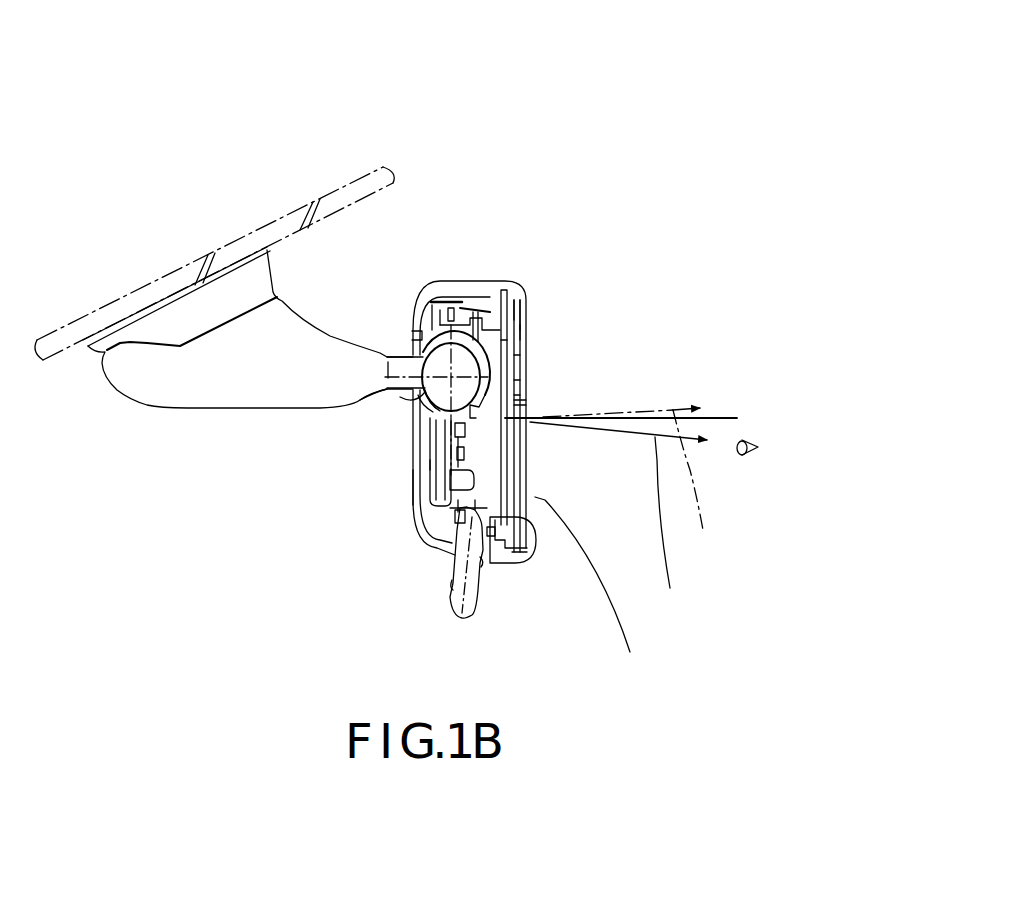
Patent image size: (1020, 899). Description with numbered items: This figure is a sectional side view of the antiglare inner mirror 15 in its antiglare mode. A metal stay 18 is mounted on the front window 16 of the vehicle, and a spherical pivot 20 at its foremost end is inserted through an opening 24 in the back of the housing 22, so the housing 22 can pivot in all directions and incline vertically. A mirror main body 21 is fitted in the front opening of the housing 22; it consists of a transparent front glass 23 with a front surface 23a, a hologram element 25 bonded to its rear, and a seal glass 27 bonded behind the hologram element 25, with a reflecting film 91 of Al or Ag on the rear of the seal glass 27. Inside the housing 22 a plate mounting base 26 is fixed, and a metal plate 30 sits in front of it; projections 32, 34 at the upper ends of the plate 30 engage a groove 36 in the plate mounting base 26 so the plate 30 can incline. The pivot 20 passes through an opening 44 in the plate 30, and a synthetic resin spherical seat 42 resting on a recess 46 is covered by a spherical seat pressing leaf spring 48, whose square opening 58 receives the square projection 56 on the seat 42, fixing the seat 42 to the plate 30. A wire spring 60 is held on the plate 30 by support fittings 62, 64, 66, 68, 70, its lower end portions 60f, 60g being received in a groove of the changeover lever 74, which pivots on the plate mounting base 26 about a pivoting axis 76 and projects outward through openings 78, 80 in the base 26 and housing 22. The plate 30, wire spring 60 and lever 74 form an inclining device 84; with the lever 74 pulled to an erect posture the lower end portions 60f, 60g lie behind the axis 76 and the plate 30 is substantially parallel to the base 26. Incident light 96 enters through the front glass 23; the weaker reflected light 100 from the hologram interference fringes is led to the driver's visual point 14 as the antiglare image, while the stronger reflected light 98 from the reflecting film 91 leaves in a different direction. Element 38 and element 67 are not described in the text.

The driver's visual point 14 is at (753, 455).
The antiglare inner mirror 15 is at (549, 103).
The front window 16 is at (297, 210).
The stay 18 is at (183, 393).
The spherical pivot 20 is at (430, 268).
The mirror main body 21 is at (522, 411).
The housing 22 is at (486, 283).
The front glass 23 is at (527, 328).
The front surface of the front glass 23a is at (527, 333).
The opening 24 is at (410, 333).
The hologram element 25 is at (528, 383).
The plate mounting base 26 is at (425, 478).
The seal glass 27 is at (530, 407).
The plate 30 is at (437, 470).
The projection 32 is at (474, 248).
The projection 34 is at (457, 280).
The groove 36 is at (492, 252).
The retainer 38 is at (478, 285).
The spherical seat 42 is at (497, 287).
The opening 44 is at (415, 419).
The recess 46 is at (353, 398).
The spherical seat pressing leaf spring 48 is at (522, 303).
The projection 56 is at (527, 350).
The square opening 58 is at (527, 392).
The wire spring 60 is at (428, 452).
The lower end portion of the wire spring 60f is at (389, 555).
The lower end portion of the wire spring 60g is at (440, 548).
The support fitting 62 is at (536, 449).
The support fitting 64 is at (542, 469).
The support fitting 66 is at (544, 499).
The pivot pin 67 is at (467, 433).
The support fitting 68 is at (500, 490).
The support fitting 70 is at (470, 458).
The changeover lever 74 is at (460, 620).
The pivoting axis 76 is at (453, 580).
The opening 78 is at (532, 519).
The opening 80 is at (479, 585).
The inclining device 84 is at (588, 595).
The reflecting film 91 is at (515, 318).
The incident light 96 is at (710, 417).
The reflected light 98 is at (699, 489).
The reflected light 100 is at (671, 531).